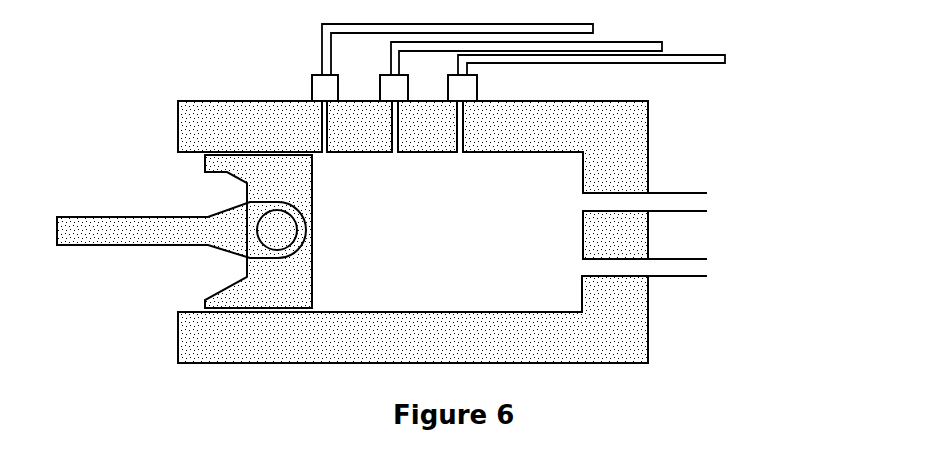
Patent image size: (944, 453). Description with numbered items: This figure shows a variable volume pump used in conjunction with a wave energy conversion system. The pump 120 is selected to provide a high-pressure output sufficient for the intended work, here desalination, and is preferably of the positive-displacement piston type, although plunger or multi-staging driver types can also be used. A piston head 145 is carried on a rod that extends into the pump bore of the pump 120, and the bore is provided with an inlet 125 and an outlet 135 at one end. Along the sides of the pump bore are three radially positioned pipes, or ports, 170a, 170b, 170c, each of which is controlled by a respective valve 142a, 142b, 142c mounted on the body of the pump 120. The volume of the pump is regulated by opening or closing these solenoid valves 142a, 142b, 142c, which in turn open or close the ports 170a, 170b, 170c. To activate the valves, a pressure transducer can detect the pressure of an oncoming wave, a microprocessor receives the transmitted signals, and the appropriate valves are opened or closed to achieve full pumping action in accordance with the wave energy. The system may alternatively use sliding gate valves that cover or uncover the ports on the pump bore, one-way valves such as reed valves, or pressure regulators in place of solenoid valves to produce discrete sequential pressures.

The pump 120 is at (413, 232).
The inlet 125 is at (710, 202).
The outlet 135 is at (702, 268).
The valve 142a is at (305, 79).
The valve 142b is at (374, 79).
The valve 142c is at (444, 79).
The piston head 145 is at (258, 231).
The pipe (port) 170a is at (608, 29).
The pipe (port) 170b is at (670, 46).
The pipe (port) 170c is at (735, 59).